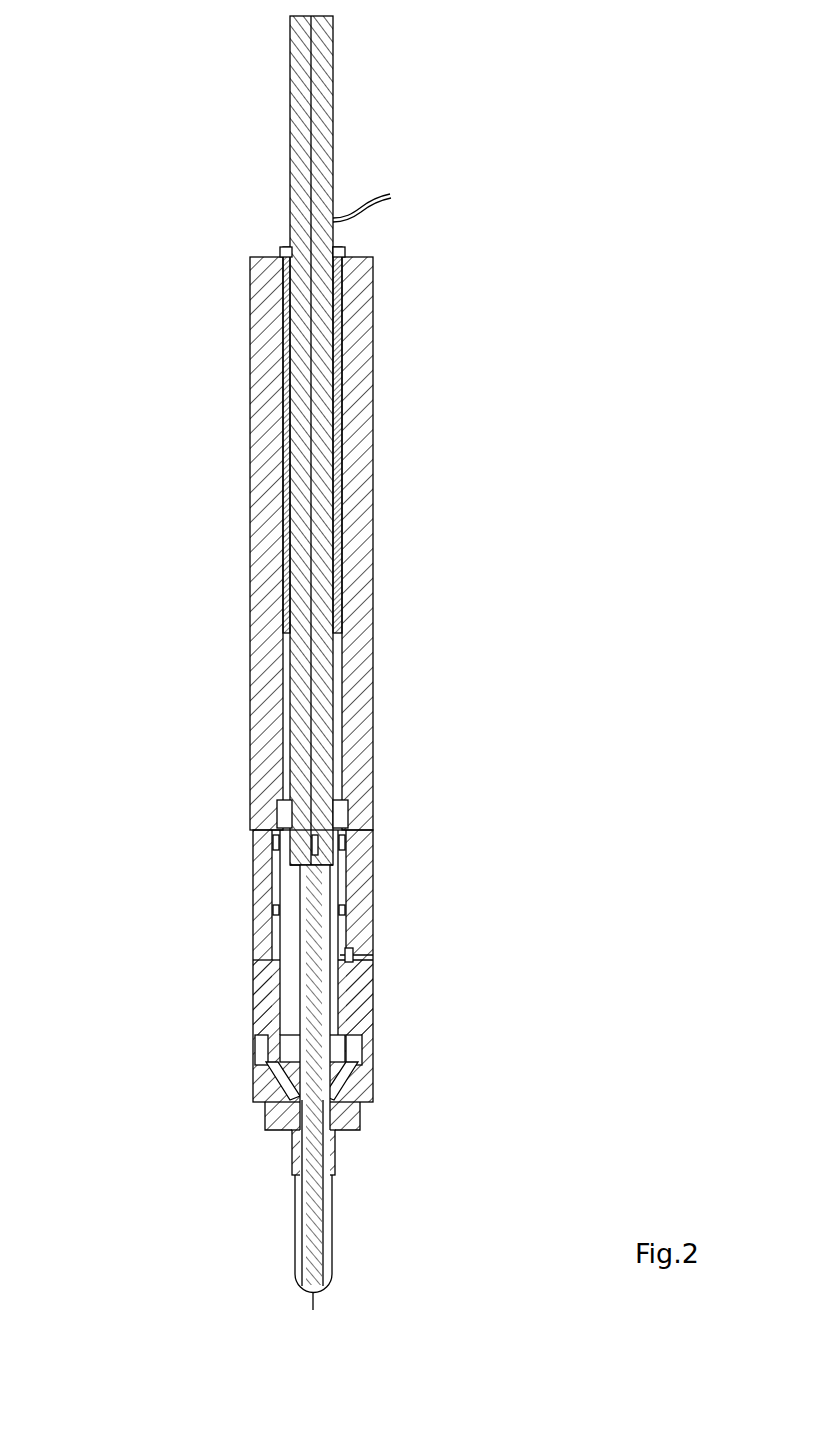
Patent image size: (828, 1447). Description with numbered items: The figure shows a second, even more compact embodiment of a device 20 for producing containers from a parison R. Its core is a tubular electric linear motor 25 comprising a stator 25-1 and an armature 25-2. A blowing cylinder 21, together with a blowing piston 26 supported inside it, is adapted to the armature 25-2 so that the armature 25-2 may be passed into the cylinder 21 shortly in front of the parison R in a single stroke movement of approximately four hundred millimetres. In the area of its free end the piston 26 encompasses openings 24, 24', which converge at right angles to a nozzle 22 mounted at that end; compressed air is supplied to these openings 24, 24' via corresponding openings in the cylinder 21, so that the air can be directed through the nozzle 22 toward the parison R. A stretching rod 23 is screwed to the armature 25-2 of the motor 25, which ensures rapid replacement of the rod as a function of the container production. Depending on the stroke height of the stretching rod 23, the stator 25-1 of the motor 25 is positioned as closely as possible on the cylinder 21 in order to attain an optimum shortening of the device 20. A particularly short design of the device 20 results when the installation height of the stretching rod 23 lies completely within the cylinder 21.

The device 20 is at (532, 249).
The tubular electric linear motor 25 is at (170, 473).
The stator 25-1 is at (290, 338).
The armature 25-2 is at (300, 697).
The blowing cylinder 21 is at (272, 975).
The stretching rod 23 is at (298, 889).
The blowing piston 26 is at (350, 950).
The opening 24 is at (214, 1051).
The opening 24' is at (410, 1087).
The nozzle 22 is at (292, 1145).
The parison R is at (328, 1238).